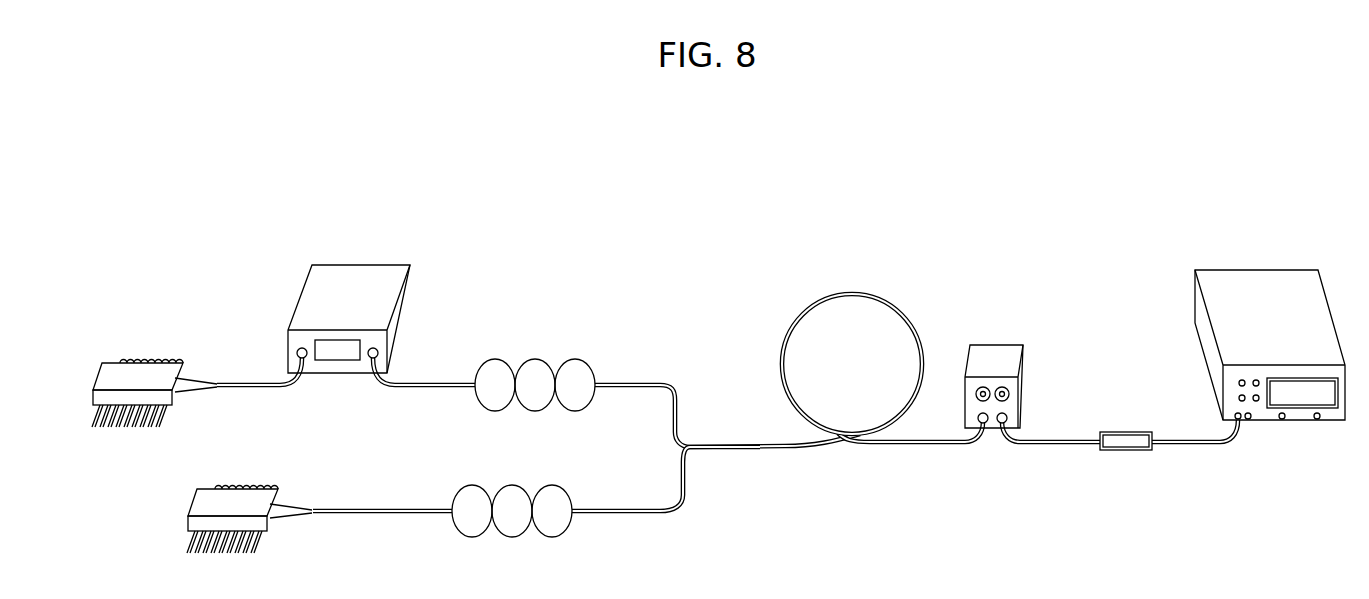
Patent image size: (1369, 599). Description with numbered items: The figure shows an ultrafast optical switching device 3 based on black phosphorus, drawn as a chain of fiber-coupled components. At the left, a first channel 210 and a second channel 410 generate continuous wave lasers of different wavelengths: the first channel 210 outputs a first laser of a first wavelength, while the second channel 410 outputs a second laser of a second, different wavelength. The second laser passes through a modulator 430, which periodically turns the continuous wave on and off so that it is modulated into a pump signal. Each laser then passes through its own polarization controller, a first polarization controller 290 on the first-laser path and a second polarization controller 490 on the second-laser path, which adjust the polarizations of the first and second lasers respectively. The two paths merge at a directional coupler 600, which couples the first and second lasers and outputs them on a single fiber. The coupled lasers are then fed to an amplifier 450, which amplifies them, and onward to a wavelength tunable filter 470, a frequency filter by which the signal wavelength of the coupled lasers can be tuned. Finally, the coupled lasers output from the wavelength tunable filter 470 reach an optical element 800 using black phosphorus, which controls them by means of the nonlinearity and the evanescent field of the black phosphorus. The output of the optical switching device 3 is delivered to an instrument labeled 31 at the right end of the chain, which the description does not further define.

The optical switching device 3 is at (1136, 160).
The second channel 410 is at (108, 362).
The first channel 210 is at (188, 520).
The modulator 430 is at (350, 265).
The second polarization controller 490 is at (535, 358).
The first polarization controller 290 is at (565, 530).
The directional coupler 600 is at (733, 450).
The amplifier 450 is at (850, 290).
The wavelength tunable filter 470 is at (1000, 345).
The optical element 800 is at (1124, 432).
The optical spectrum analyzer (OSA) 31 is at (1247, 270).